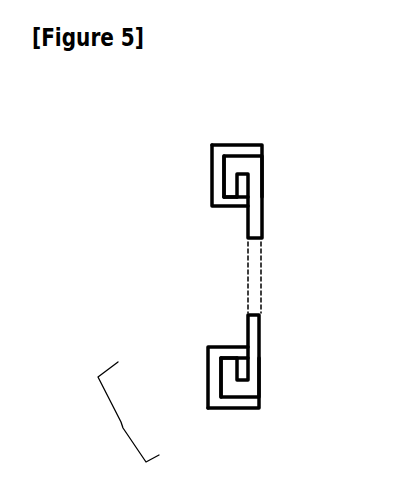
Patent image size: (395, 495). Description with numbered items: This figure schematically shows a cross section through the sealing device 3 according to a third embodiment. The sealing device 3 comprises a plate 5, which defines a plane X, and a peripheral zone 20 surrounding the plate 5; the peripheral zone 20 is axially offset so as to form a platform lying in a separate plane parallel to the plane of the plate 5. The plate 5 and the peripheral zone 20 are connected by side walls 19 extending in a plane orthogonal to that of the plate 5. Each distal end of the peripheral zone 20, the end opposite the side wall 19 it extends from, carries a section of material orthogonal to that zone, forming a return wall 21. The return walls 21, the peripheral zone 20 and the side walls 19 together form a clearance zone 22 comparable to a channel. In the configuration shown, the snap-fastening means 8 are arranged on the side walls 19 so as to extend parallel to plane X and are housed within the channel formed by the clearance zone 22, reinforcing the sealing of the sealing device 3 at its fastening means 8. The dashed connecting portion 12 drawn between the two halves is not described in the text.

The sealing device 3 is at (121, 424).
The plate 5 is at (253, 220).
The snap-fastening means 8 is at (240, 351).
The connecting portion 12 is at (260, 275).
The side walls 19 is at (223, 205).
The peripheral zone 20 is at (222, 157).
The return wall 21 is at (264, 147).
The clearance zone 22 is at (270, 157).